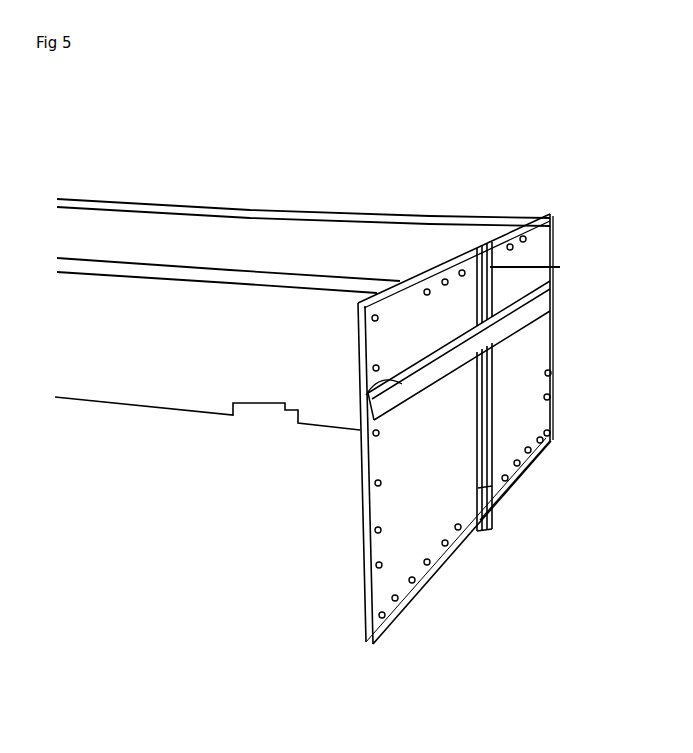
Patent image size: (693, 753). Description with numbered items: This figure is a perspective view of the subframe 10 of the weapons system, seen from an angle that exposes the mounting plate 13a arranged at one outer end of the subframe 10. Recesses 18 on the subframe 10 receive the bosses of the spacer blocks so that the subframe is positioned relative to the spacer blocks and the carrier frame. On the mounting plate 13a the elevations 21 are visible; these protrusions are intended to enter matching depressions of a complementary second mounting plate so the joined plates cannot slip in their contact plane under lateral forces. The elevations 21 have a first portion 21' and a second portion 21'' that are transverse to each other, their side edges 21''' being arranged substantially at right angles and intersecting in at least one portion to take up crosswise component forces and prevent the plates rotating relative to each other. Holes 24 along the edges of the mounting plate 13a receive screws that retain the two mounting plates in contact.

The subframe 10 is at (350, 235).
The mounting plate 13a is at (520, 355).
The recesses 18 is at (278, 407).
The elevations 21 is at (514, 343).
The first portion of the elevations 21' is at (575, 229).
The second portion of the elevations 21'' is at (508, 342).
The side edges of the protrusions 21''' is at (391, 529).
The holes 24 is at (547, 432).